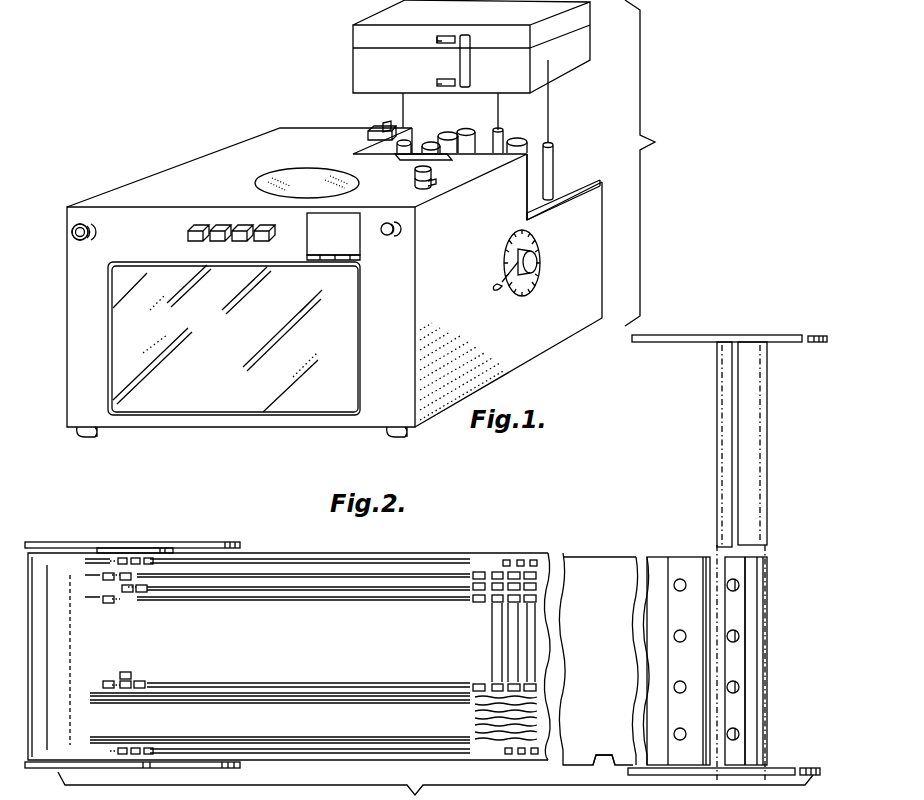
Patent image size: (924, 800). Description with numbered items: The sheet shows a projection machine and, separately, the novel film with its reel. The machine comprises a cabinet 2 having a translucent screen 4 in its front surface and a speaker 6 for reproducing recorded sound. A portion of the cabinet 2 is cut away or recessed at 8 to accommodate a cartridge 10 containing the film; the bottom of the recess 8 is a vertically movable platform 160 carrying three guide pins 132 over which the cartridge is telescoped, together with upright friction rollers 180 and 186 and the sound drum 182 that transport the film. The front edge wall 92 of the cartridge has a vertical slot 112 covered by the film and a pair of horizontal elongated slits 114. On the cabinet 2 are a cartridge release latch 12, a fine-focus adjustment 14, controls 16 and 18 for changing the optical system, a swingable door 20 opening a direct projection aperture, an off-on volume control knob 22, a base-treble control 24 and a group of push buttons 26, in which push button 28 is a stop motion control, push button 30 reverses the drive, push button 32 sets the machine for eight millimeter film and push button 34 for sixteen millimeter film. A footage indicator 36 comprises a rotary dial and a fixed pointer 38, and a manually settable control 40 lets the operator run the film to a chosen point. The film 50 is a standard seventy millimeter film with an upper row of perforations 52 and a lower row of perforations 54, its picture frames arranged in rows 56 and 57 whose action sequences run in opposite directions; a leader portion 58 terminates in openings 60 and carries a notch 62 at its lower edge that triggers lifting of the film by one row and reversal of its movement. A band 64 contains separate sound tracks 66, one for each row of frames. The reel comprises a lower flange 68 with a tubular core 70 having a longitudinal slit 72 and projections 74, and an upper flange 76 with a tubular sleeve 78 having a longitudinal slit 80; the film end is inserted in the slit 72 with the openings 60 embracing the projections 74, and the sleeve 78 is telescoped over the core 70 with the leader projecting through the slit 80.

In FIG. 1, the cabinet 2 is at (197, 170).
In FIG. 1, the translucent screen 4 is at (218, 405).
In FIG. 1, the speaker 6 is at (300, 178).
In FIG. 1, the recess 8 is at (575, 152).
In FIG. 1, the cartridge 10 is at (440, 46).
In FIG. 1, the cartridge release latch 12 is at (386, 127).
In FIG. 1, the fine-focus adjustment 14 is at (396, 228).
In FIG. 1, the control 16 is at (431, 184).
In FIG. 1, the control 18 is at (432, 172).
In FIG. 1, the swingable door 20 is at (350, 242).
In FIG. 1, the off-on volume control knob 22 is at (72, 232).
In FIG. 1, the base-treble control 24 is at (88, 225).
In FIG. 1, the group of push buttons 26 is at (209, 220).
In FIG. 1, the push button 28 is at (196, 228).
In FIG. 1, the pushbutton 30 is at (222, 228).
In FIG. 1, the push button 32 is at (243, 228).
In FIG. 1, the push button 34 is at (268, 238).
In FIG. 1, the footage indicator 36 is at (537, 290).
In FIG. 1, the fixed pointer 38 is at (498, 276).
In FIG. 1, the manually settable control 40 is at (540, 263).
In FIG. 1, the front edge wall 92 is at (372, 72).
In FIG. 1, the vertical slot 112 is at (470, 72).
In FIG. 1, the horizontal elongated slits 114 is at (436, 40).
In FIG. 1, the guide pins 132 is at (406, 140).
In FIG. 1, the platform 160 is at (565, 188).
In FIG. 1, the friction roller 180 is at (478, 108).
In FIG. 1, the sound drum 182 is at (458, 128).
In FIG. 1, the friction roller 186 is at (540, 136).
In FIG. 2, the film 50 is at (297, 654).
In FIG. 2, the upper row of perforations 52 is at (532, 559).
In FIG. 2, the lower row of perforations 54 is at (520, 758).
In FIG. 2, the row 56 is at (479, 570).
In FIG. 2, the row 57 is at (497, 583).
In FIG. 2, the leader portion 58 is at (598, 570).
In FIG. 2, the openings 60 is at (678, 630).
In FIG. 2, the notch 62 is at (602, 767).
In FIG. 2, the band of sound tracks 64 is at (342, 708).
In FIG. 2, the sound track 66 is at (474, 712).
In FIG. 2, the lower flange 68 is at (768, 768).
In FIG. 2, the tubular core 70 is at (759, 662).
In FIG. 2, the longitudinal slit 72 is at (748, 628).
In FIG. 2, the projections 74 is at (738, 632).
In FIG. 2, the upper flange 76 is at (680, 335).
In FIG. 2, the tubular sleeve 78 is at (768, 455).
In FIG. 2, the longitudinal slit 80 is at (730, 425).